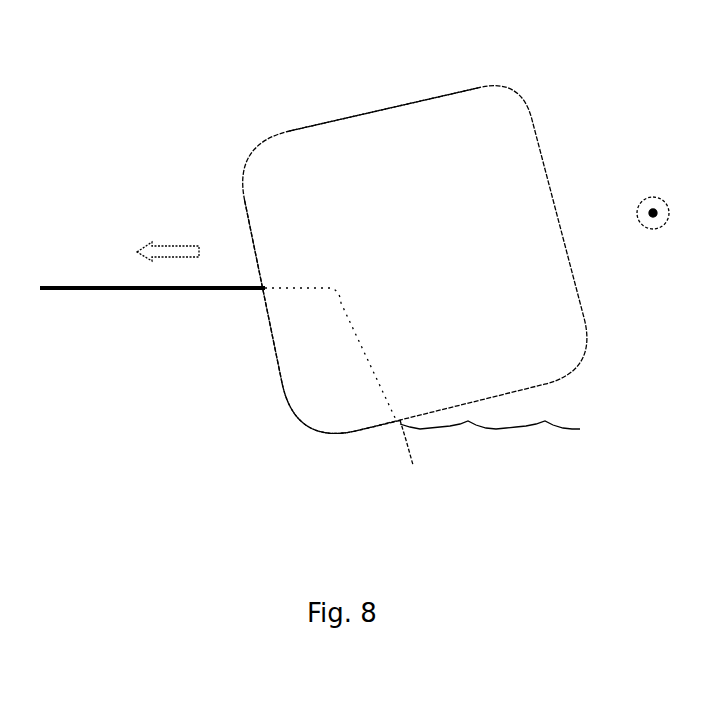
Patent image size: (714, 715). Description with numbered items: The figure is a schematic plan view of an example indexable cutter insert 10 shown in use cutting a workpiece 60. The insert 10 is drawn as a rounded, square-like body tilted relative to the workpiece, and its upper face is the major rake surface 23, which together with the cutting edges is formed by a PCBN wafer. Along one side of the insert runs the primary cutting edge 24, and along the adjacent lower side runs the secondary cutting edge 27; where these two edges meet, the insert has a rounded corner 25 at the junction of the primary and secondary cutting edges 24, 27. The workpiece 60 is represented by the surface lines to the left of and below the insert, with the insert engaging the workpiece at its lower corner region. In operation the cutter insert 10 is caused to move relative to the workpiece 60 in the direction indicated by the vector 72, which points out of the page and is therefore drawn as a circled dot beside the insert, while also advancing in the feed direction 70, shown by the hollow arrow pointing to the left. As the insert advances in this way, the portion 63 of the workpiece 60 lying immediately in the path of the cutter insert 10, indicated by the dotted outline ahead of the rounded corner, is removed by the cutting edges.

The indexable cutter insert 10 is at (381, 108).
The major rake surface 23 is at (325, 182).
The primary cutting edge 24 is at (275, 350).
The rounded corner 25 is at (303, 410).
The secondary cutting edge 27 is at (349, 433).
The workpiece 60 is at (309, 381).
The portion of the workpiece 63 is at (340, 315).
The feed direction 70 is at (168, 233).
The vector 72 is at (653, 199).